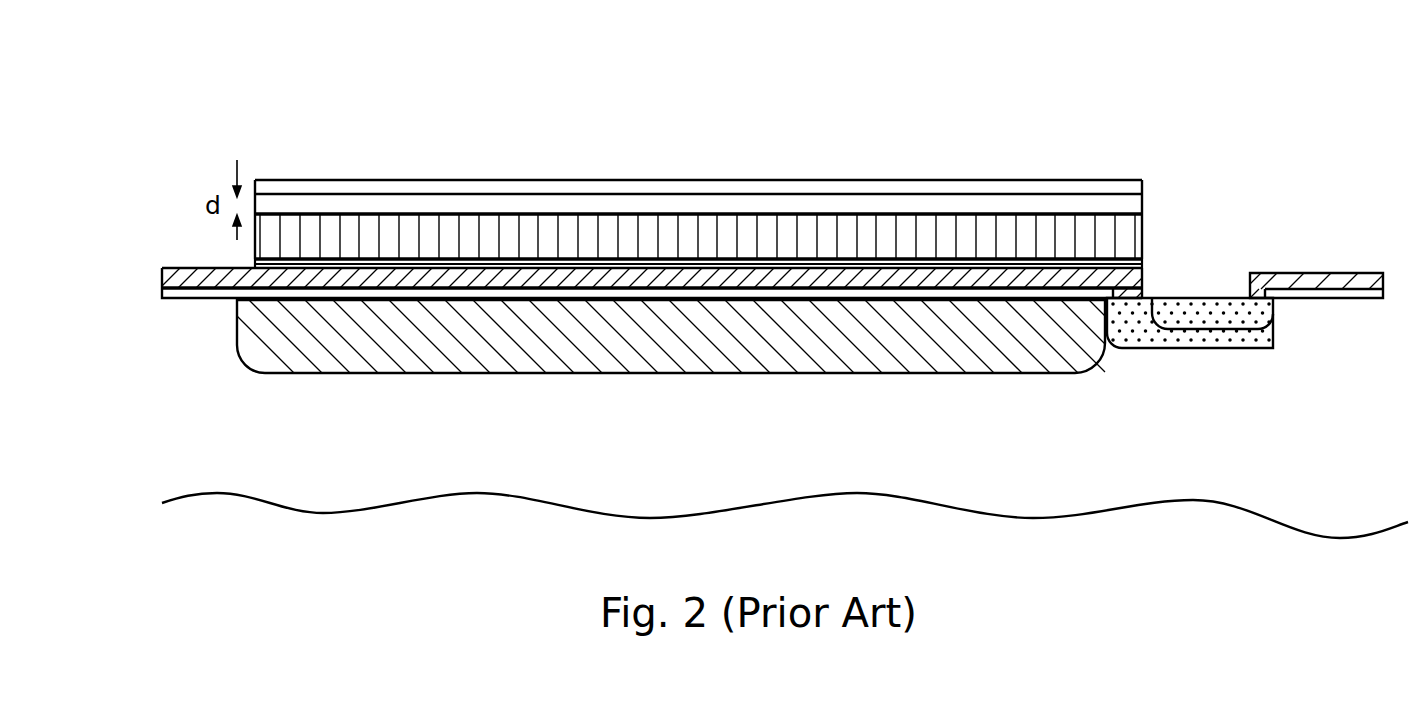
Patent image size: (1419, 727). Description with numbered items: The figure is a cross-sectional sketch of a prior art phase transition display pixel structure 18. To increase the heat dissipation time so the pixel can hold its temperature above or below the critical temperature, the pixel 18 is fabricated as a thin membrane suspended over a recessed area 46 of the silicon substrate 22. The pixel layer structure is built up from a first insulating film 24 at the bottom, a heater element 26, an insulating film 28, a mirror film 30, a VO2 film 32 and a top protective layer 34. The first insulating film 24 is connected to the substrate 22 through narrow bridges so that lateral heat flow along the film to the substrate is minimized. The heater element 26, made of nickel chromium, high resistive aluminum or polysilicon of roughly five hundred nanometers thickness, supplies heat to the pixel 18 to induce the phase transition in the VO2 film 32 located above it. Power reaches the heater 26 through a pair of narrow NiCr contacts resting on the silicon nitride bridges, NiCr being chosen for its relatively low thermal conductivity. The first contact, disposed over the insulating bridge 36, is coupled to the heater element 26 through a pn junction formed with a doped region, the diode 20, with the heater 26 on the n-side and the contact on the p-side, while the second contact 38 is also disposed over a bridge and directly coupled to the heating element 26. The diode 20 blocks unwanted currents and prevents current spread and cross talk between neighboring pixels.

The pixel 18 is at (255, 116).
The diode 20 is at (1213, 348).
The silicon substrate 22 is at (1028, 505).
The first insulating film 24 is at (1033, 293).
The heater element 26 is at (1142, 278).
The insulating film 28 is at (1142, 265).
The mirror film 30 is at (1143, 200).
The VO2 film 32 is at (1142, 232).
The top protective layer 34 is at (346, 180).
The insulating bridge 36 is at (1283, 273).
The second contact 38 is at (193, 290).
The recessed area 46 is at (435, 353).